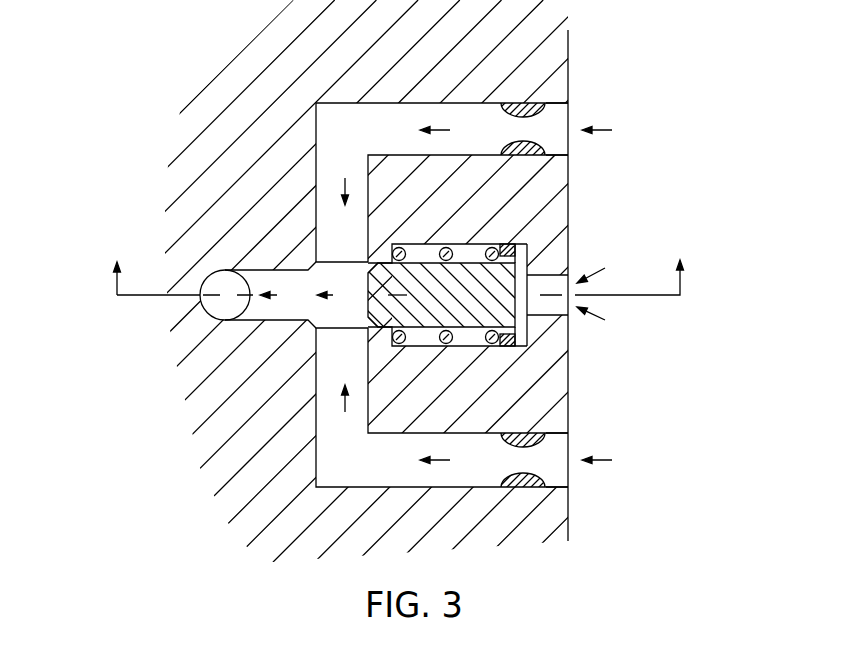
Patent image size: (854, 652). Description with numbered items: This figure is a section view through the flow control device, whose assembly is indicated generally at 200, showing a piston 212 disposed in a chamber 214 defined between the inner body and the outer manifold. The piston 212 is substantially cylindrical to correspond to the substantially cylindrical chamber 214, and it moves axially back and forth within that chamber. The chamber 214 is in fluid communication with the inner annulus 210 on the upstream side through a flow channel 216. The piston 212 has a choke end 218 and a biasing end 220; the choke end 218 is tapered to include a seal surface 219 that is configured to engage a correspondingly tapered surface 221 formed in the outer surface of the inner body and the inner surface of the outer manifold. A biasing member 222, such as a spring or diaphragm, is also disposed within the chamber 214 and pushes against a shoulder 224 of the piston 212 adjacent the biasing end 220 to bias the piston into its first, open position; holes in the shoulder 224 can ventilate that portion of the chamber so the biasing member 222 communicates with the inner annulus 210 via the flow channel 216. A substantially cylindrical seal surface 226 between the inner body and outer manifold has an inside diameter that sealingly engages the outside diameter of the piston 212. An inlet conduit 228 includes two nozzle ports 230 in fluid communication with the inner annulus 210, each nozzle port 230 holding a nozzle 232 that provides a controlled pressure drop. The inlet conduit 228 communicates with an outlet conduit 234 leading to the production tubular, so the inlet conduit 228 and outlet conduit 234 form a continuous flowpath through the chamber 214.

The valve assembly 200 is at (427, 285).
The inner annulus 210 is at (767, 314).
The piston 212 is at (470, 315).
The chamber 214 is at (478, 246).
The flow channel 216 is at (547, 308).
The choke end 218 is at (372, 272).
The seal surface 219 is at (368, 326).
The biasing end 220 is at (522, 257).
The tapered surface 221 is at (315, 308).
The biasing member 222 is at (425, 243).
The shoulder 224 is at (508, 338).
The seal surface 226 is at (397, 337).
The inlet conduit 228 is at (336, 139).
The nozzle port 230 is at (548, 120).
The nozzle 232 is at (530, 106).
The outlet conduit 234 is at (280, 275).